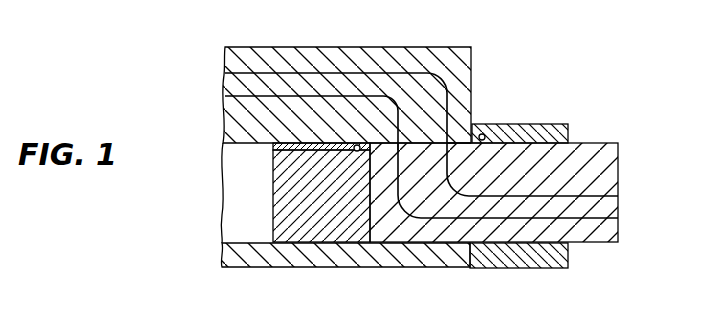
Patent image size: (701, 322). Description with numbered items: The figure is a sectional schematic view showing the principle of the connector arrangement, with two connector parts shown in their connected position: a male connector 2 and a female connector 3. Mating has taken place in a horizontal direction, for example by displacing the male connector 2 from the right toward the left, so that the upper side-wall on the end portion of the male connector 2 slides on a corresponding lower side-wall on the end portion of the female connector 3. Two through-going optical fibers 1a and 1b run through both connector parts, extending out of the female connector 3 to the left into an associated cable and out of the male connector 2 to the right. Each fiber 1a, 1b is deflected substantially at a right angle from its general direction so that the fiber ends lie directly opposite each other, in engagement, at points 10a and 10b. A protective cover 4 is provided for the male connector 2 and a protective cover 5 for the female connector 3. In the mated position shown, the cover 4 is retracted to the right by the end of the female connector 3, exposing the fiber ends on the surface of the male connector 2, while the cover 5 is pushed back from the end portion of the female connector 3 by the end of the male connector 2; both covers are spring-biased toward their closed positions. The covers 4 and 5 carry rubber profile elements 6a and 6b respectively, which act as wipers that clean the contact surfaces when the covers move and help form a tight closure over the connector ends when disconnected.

The optical fiber 1a is at (225, 73).
The optical fiber 1b is at (225, 96).
The male connector part 2 is at (578, 178).
The female connector part 3 is at (280, 127).
The protective cover 4 is at (548, 134).
The protective cover 5 is at (305, 193).
The rubber profile element 6a is at (482, 132).
The rubber profile element 6b is at (273, 155).
The point 10a is at (452, 134).
The point 10b is at (404, 157).